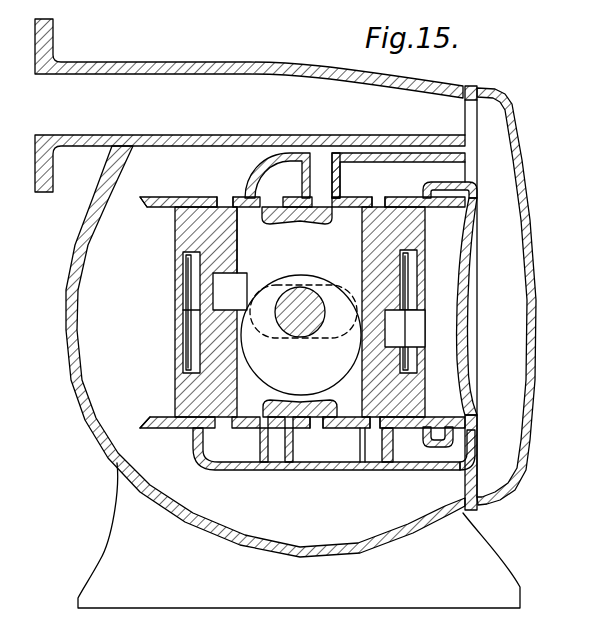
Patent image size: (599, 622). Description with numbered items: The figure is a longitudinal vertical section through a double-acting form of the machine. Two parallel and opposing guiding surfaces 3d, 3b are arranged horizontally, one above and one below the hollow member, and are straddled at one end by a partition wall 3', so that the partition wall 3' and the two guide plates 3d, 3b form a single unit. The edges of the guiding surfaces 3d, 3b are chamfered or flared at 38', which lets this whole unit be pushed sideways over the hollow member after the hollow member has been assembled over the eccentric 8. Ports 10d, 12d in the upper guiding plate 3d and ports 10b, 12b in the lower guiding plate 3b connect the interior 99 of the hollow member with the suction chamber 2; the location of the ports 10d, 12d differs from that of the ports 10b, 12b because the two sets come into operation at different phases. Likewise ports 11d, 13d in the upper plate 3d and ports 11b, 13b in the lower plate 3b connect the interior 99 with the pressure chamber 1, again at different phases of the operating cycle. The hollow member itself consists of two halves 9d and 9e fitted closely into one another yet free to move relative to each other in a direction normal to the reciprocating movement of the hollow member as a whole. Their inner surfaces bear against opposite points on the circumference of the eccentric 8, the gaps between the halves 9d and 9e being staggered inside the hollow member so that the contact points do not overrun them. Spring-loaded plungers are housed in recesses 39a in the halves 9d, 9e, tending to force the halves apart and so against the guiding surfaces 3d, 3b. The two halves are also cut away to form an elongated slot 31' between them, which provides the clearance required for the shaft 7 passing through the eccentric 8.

The pressure chamber 1 is at (68, 357).
The suction chamber 2 is at (512, 183).
The partition wall 3' is at (466, 326).
The guiding surface 3d is at (173, 196).
The guiding surface 3b is at (167, 428).
The chamfered or flared edges 38' is at (92, 319).
The port 10d is at (273, 196).
The port 11d is at (221, 196).
The port 12d is at (385, 188).
The port 13d is at (322, 166).
The half of hollow member 9d is at (174, 228).
The half of hollow member 9e is at (172, 393).
The interior of the hollow member 99 is at (247, 236).
The recesses 39a is at (192, 289).
The eccentric 8 is at (301, 335).
The shaft 7 is at (298, 290).
The elongated slot 31' is at (303, 297).
The port 10b is at (323, 424).
The port 11b is at (368, 424).
The port 12b is at (230, 423).
The port 13b is at (280, 423).